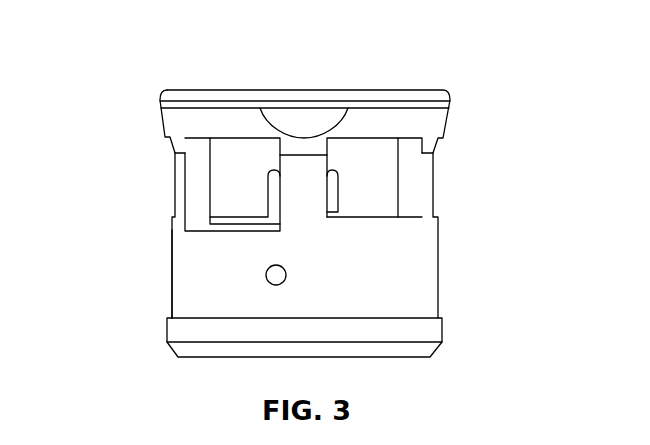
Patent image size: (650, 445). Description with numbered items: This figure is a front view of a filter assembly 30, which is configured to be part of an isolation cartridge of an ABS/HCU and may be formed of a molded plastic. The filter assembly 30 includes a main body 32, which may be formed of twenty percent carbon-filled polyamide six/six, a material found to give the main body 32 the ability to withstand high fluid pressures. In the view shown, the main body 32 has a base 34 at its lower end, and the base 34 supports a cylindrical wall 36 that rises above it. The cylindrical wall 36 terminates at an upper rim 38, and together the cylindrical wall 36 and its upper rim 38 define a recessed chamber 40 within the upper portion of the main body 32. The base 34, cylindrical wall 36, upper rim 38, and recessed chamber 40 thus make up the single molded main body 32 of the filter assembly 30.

The filter assembly 30 is at (138, 58).
The main body 32 is at (428, 280).
The base 34 is at (432, 348).
The cylindrical wall 36 is at (178, 304).
The upper rim 38 is at (428, 90).
The recessed chamber 40 is at (362, 190).